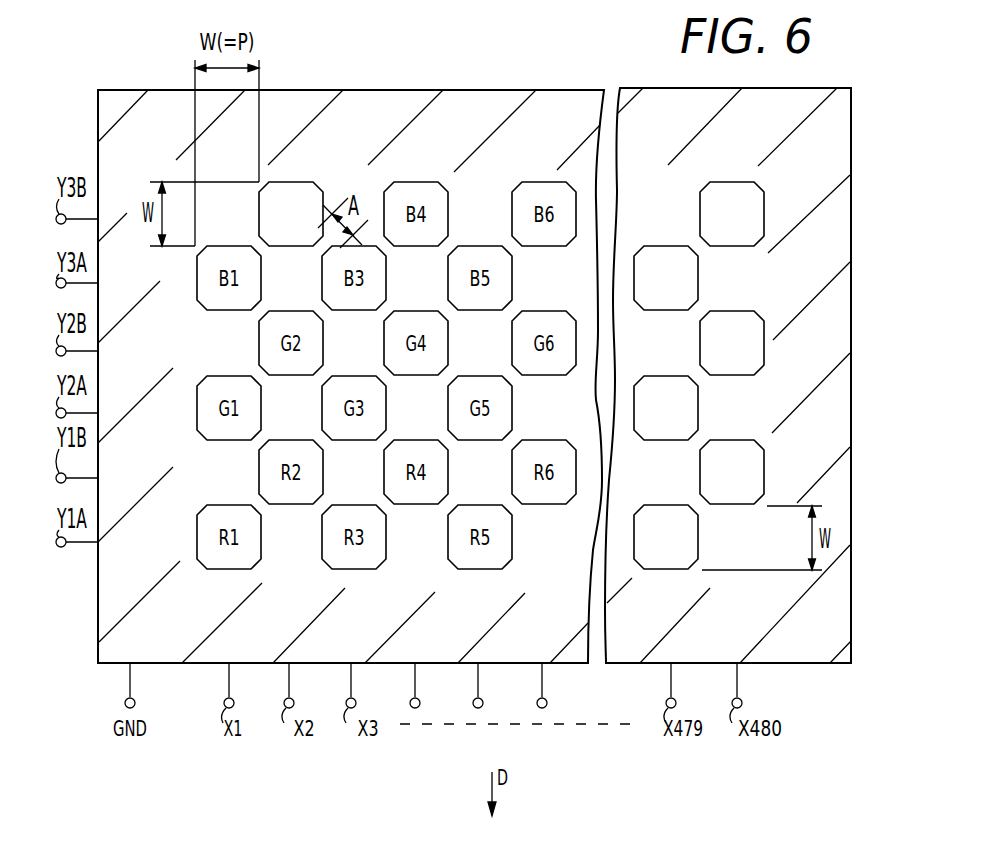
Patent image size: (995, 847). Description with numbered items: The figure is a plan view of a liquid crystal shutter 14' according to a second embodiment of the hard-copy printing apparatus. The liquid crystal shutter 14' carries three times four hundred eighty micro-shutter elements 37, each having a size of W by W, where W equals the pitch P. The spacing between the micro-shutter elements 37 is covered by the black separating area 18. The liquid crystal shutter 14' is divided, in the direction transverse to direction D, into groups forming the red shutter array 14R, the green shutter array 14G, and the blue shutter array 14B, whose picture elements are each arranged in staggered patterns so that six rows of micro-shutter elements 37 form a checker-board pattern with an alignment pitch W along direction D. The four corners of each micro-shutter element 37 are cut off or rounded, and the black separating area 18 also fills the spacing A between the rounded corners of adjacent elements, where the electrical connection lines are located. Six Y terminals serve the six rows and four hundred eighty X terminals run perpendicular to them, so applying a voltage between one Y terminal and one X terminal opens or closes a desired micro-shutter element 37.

The black separating area 18 is at (147, 106).
The liquid crystal shutter 14' is at (474, 354).
The micro-shutter element 37 is at (312, 183).
The blue shutter array 14B is at (857, 183).
The green shutter array 14G is at (857, 312).
The red shutter array 14R is at (857, 447).